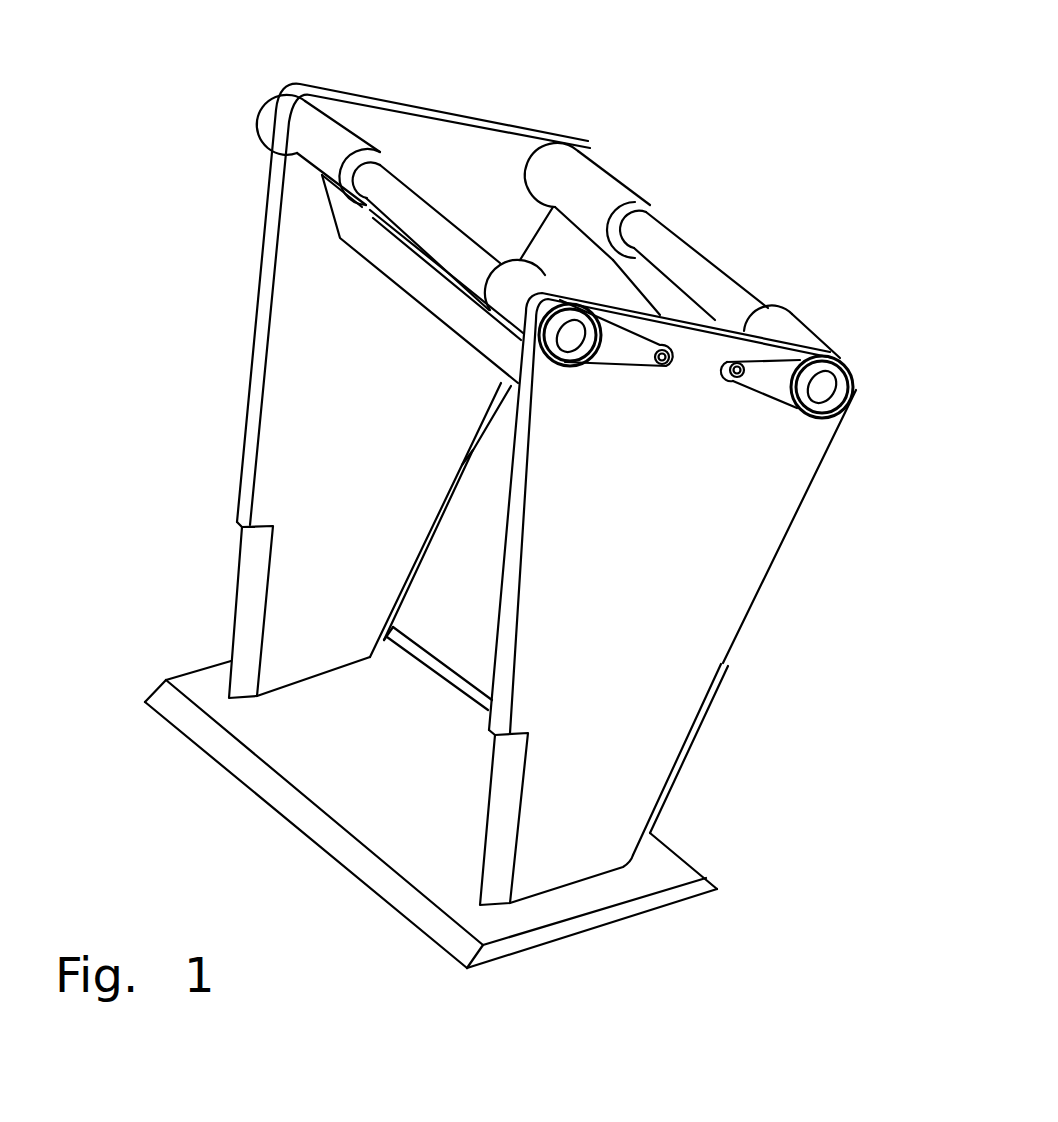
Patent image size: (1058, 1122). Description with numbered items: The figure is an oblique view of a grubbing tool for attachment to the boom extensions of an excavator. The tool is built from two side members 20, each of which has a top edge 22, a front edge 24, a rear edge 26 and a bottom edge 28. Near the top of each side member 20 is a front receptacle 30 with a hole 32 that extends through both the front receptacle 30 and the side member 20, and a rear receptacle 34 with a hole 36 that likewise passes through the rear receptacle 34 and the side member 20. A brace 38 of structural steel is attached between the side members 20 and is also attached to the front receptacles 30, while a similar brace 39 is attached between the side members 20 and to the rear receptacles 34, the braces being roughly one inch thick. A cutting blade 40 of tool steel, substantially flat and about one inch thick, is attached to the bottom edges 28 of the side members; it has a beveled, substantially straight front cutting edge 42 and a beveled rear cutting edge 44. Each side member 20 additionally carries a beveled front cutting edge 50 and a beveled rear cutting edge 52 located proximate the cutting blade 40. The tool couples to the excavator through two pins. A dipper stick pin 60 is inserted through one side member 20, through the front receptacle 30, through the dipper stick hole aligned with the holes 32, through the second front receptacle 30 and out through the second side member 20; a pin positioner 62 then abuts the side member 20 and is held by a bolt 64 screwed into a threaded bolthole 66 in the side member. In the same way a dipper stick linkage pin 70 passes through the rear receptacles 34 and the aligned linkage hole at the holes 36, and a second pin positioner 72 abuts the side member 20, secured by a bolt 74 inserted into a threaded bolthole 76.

The side member 20 is at (376, 390).
The top edge 22 is at (460, 118).
The front edge 24 is at (267, 247).
The rear edge 26 is at (465, 420).
The bottom edge 28 is at (323, 673).
The front receptacle 30 is at (335, 137).
The hole 32 is at (373, 170).
The rear receptacle 34 is at (588, 185).
The hole 36 is at (643, 207).
The brace 38 is at (422, 255).
The brace 39 is at (557, 237).
The cutting blade 40 is at (344, 756).
The front cutting edge 42 is at (345, 870).
The rear cutting edge 44 is at (693, 870).
The front cutting edge 50 is at (253, 612).
The rear cutting edge 52 is at (397, 612).
The dipper stick pin 60 is at (443, 233).
The pin positioner 62 is at (617, 350).
The bolt 64 is at (655, 362).
The threaded bolthole 66 is at (662, 357).
The dipper stick linkage pin 70 is at (693, 273).
The pin positioner 72 is at (772, 378).
The bolt 74 is at (733, 377).
The threaded bolthole 76 is at (737, 370).